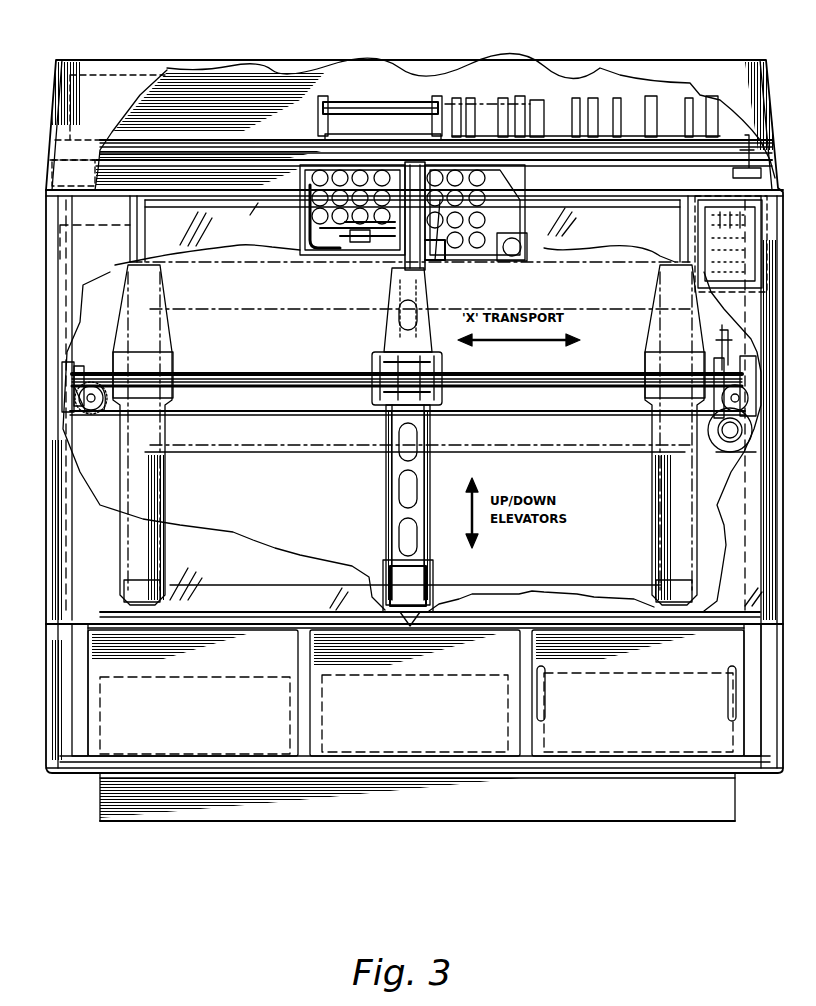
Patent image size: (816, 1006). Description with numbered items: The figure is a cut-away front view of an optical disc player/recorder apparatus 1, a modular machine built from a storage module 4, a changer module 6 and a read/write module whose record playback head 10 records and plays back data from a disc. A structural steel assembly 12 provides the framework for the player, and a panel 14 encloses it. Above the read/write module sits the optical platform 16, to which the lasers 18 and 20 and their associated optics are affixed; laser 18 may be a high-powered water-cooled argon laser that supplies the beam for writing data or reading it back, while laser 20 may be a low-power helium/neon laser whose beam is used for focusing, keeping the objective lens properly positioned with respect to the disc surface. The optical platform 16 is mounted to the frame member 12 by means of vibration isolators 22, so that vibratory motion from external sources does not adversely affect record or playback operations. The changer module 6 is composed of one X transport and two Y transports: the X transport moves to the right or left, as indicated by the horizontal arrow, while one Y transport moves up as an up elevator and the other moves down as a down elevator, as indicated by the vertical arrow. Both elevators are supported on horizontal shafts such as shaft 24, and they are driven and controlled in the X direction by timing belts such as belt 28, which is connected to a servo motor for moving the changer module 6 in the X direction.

The optical disc player/recorder apparatus 1 is at (34, 424).
The storage module 4 is at (265, 510).
The changer module 6 is at (388, 360).
The record playback head 10 is at (455, 205).
The structural steel assembly 12 is at (58, 338).
The panel 14 is at (258, 727).
The optical platform 16 is at (262, 140).
The laser 18 is at (500, 75).
The laser 20 is at (372, 100).
The vibration isolators 22 is at (58, 180).
The horizontal shaft 24 is at (262, 375).
The timing belt 28 is at (195, 415).